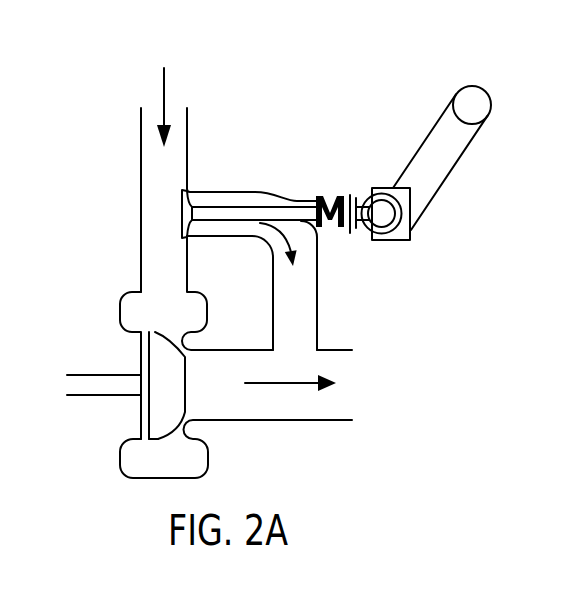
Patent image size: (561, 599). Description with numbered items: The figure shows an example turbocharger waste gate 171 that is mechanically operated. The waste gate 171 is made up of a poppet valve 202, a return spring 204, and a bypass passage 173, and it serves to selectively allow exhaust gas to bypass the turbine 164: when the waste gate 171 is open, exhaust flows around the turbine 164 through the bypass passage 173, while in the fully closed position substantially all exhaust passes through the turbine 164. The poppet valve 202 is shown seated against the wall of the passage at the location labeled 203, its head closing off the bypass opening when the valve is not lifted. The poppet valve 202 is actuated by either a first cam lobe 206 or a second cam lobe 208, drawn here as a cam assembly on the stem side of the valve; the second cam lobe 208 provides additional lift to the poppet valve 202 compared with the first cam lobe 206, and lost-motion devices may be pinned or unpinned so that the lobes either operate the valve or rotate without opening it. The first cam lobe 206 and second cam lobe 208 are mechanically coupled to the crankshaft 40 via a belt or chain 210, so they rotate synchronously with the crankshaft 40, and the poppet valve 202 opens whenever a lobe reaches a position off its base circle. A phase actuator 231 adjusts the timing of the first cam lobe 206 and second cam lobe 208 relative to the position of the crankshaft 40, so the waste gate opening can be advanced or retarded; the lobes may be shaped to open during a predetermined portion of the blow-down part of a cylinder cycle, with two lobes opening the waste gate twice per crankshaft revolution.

The crankshaft 40 is at (467, 87).
The turbine 164 is at (167, 385).
The turbocharger waste gate 171 is at (256, 129).
The bypass passage 173 is at (318, 315).
The poppet valve 202 is at (240, 213).
The valve seat 203 is at (189, 240).
The return spring 204 is at (337, 228).
The first cam lobe 206 is at (382, 233).
The second cam lobe 208 is at (368, 191).
The belt or chain 210 is at (467, 147).
The phase actuator 231 is at (417, 228).